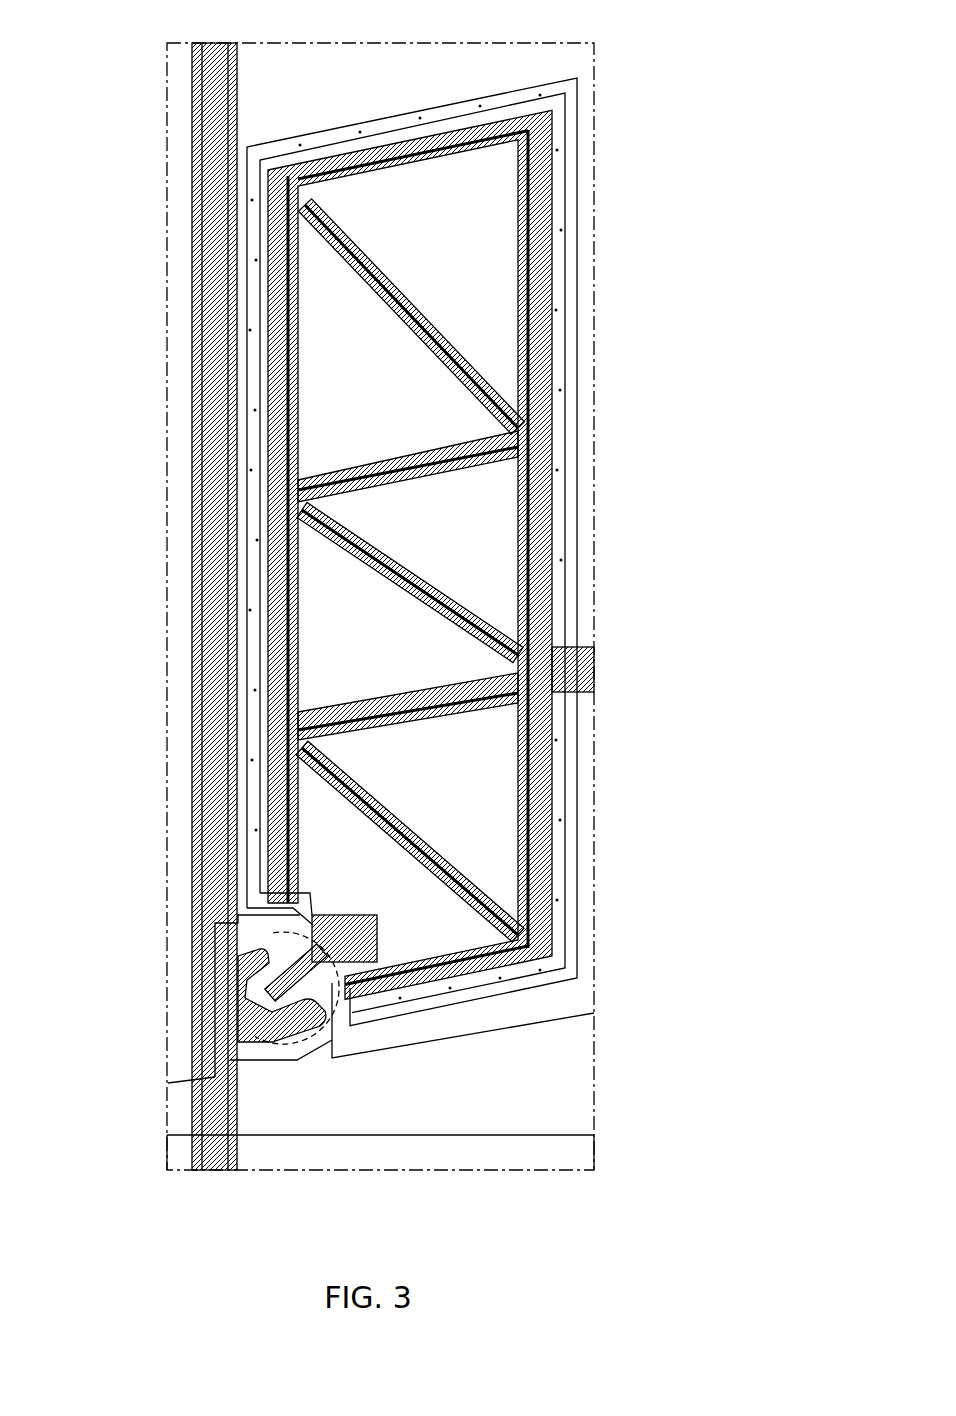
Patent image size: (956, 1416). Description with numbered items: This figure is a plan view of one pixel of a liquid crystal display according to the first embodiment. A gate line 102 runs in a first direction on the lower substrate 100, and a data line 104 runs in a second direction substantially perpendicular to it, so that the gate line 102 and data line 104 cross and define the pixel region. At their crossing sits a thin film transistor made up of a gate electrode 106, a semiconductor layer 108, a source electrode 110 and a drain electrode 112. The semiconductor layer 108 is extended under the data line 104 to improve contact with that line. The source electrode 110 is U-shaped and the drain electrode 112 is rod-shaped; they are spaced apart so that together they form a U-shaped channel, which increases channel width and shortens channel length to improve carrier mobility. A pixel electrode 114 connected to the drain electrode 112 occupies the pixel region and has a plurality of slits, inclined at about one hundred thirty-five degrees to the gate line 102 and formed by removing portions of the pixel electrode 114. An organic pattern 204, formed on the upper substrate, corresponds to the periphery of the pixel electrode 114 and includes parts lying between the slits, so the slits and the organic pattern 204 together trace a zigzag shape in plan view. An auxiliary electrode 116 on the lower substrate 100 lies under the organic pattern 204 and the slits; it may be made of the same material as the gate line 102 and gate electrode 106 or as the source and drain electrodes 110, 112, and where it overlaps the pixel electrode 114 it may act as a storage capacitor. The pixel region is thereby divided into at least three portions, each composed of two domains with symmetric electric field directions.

The lower substrate 100 is at (595, 608).
The gate line 102 is at (527, 1135).
The data line 104 is at (192, 825).
The gate electrode 106 is at (223, 928).
The semiconductor layer 108 is at (290, 1015).
The source electrode 110 is at (265, 1045).
The drain electrode 112 is at (305, 1000).
The pixel electrode 114 is at (567, 838).
The auxiliary electrode 116 is at (440, 323).
The organic pattern 204 is at (390, 117).